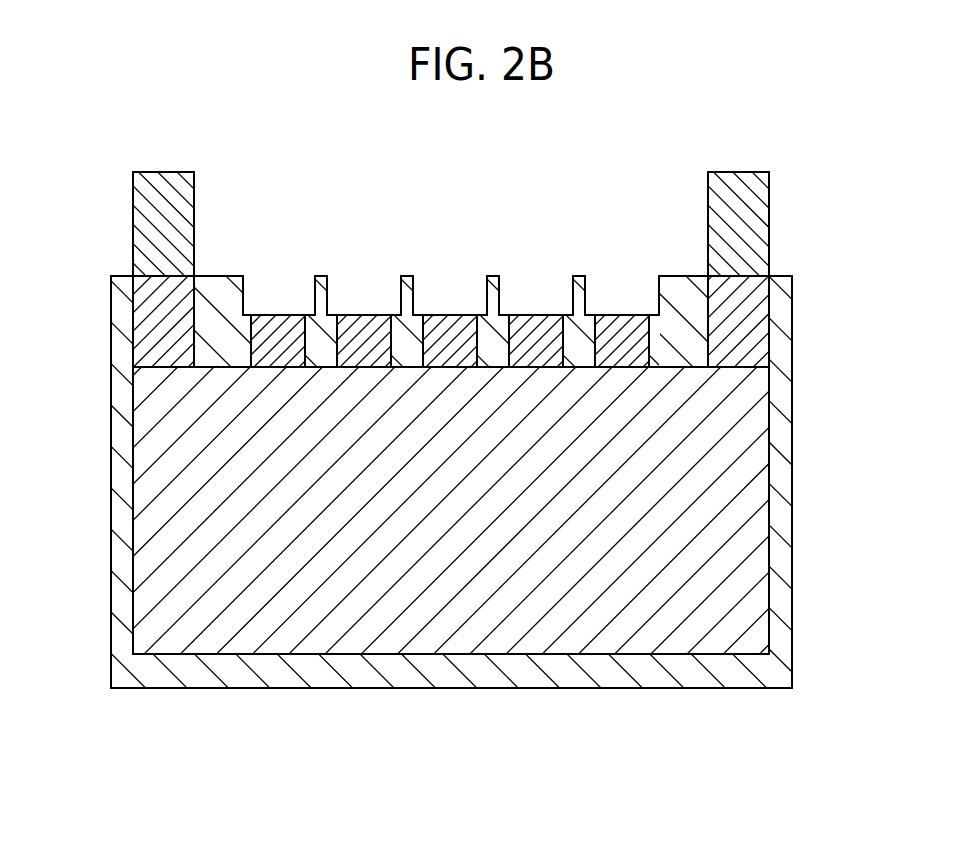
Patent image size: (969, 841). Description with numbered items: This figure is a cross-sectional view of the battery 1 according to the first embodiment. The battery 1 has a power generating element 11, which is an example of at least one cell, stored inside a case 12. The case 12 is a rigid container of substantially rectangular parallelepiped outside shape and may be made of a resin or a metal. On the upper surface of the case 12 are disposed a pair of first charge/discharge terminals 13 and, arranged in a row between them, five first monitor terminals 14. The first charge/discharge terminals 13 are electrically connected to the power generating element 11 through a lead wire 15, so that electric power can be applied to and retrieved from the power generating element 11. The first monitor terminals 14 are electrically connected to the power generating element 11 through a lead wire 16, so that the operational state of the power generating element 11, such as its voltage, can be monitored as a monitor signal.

The battery 1 is at (820, 132).
The power generating element 11 is at (753, 390).
The case 12 is at (780, 480).
The first charge/discharge terminal 13 is at (172, 192).
The first monitor terminal 14 is at (262, 284).
The lead wire 15 is at (160, 313).
The lead wire 16 is at (285, 332).